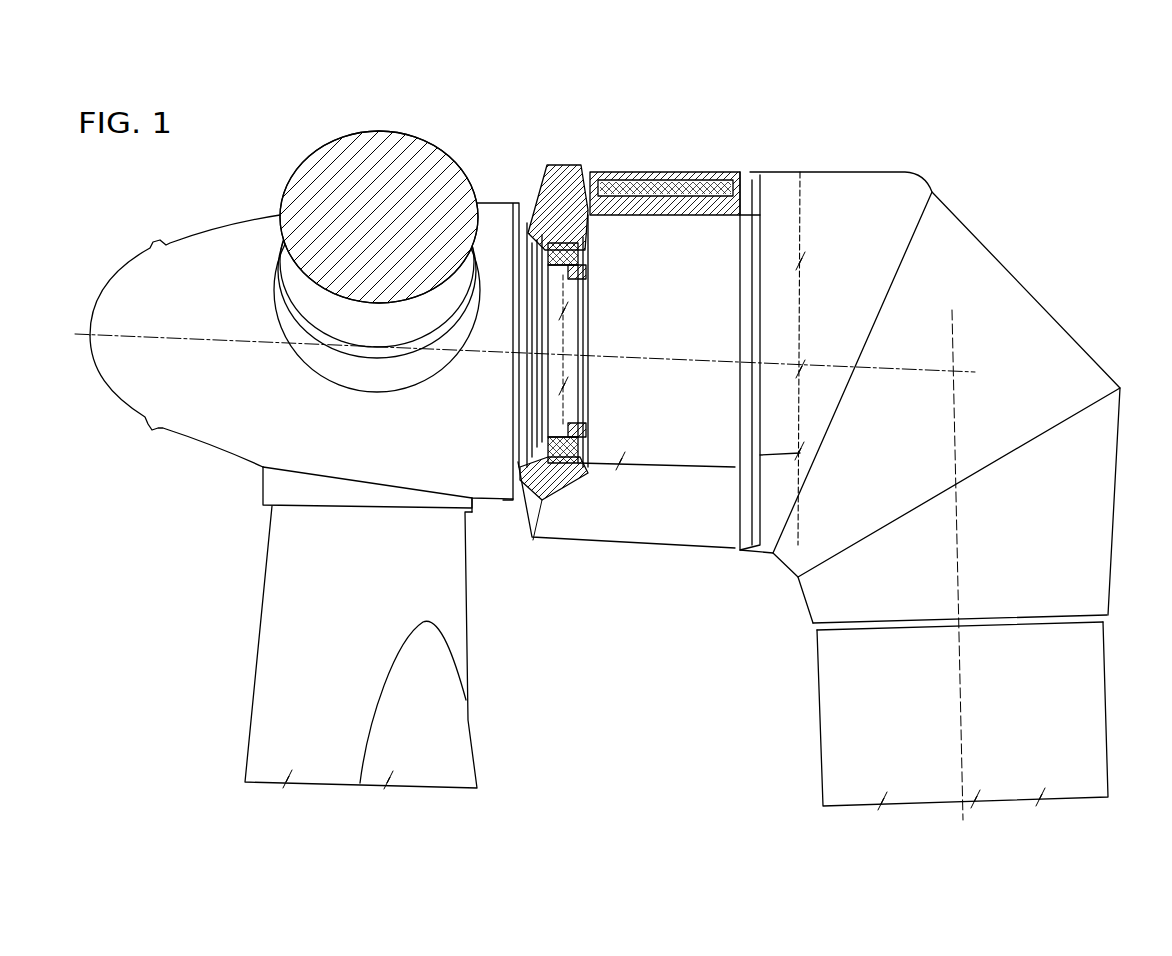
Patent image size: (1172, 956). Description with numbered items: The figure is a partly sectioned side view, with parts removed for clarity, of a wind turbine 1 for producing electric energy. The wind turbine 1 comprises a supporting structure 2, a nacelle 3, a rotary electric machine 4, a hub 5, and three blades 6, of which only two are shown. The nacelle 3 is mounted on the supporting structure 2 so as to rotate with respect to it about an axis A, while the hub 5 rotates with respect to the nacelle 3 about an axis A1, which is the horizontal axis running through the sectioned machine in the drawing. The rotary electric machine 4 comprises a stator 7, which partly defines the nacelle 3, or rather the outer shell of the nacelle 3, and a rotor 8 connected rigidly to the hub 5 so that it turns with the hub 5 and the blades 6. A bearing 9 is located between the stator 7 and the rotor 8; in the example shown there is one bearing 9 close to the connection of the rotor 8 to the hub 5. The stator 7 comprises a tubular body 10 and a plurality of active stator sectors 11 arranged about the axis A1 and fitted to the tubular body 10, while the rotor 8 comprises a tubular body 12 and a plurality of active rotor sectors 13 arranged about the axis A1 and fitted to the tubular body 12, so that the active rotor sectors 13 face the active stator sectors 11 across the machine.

The wind turbine 1 is at (977, 166).
The supporting structure 2 is at (868, 720).
The nacelle 3 is at (992, 276).
The rotary electric machine 4 is at (693, 152).
The hub 5 is at (496, 212).
The blades 6 is at (270, 252).
The stator 7 is at (762, 220).
The rotor 8 is at (763, 220).
The bearing 9 is at (522, 472).
The tubular body 10 is at (612, 168).
The active stator sectors 11 is at (622, 172).
The tubular body 12 is at (700, 165).
The active rotor sectors 13 is at (647, 172).
The axis A is at (962, 516).
The axis A1 is at (868, 368).